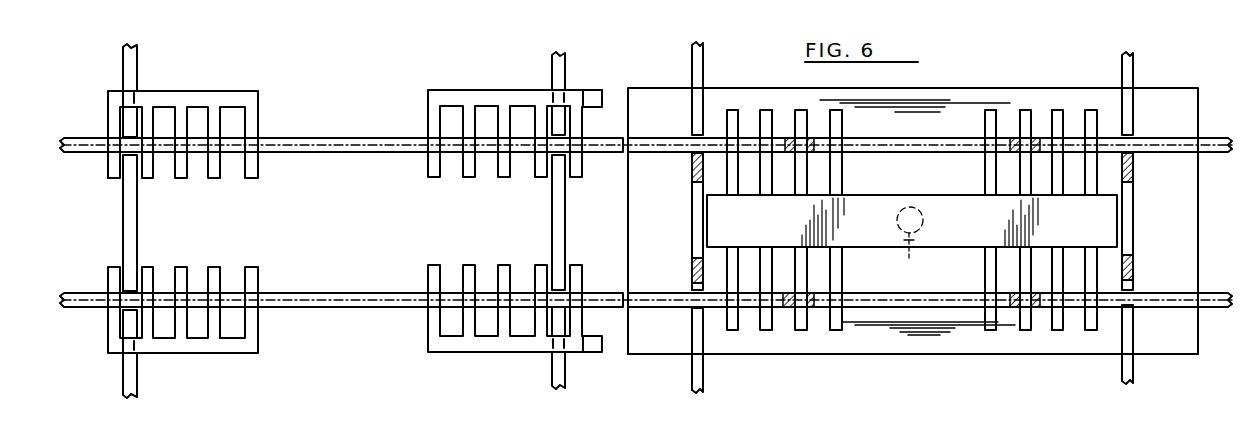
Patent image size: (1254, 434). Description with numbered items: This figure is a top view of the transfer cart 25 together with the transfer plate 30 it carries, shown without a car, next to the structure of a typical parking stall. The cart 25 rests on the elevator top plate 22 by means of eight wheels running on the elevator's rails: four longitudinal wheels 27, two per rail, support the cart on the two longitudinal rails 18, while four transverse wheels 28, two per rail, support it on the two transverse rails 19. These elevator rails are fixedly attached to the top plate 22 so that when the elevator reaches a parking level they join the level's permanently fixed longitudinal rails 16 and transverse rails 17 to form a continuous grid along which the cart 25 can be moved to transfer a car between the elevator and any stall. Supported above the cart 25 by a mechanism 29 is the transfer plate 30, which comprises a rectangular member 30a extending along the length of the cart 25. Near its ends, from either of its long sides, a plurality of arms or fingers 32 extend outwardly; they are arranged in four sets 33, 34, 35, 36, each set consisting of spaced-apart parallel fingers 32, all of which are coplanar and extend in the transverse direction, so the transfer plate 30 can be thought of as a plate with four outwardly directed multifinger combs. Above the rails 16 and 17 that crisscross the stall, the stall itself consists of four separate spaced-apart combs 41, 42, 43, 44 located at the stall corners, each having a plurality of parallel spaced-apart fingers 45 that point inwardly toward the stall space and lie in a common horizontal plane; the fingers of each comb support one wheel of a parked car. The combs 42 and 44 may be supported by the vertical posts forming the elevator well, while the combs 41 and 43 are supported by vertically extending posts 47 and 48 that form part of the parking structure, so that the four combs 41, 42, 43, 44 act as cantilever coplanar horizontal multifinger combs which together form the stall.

The longitudinal rails 16 is at (357, 122).
The transverse rails 17 is at (134, 63).
The longitudinal rails of the elevator 18 is at (920, 146).
The transverse rails of the elevator 19 is at (692, 127).
The top plate 22 is at (910, 338).
The transfer cart 25 is at (892, 278).
The longitudinal wheels 27 is at (800, 156).
The transverse wheels 28 is at (692, 170).
The mechanism 29 is at (905, 250).
The transfer plate 30 is at (866, 230).
The rectangular member 30a is at (1105, 210).
The fingers 32 is at (768, 110).
The finger set 33 is at (812, 283).
The finger set 34 is at (1014, 252).
The finger set 35 is at (819, 122).
The finger set 36 is at (1005, 122).
The comb 41 is at (259, 346).
The comb 42 is at (428, 351).
The comb 43 is at (255, 90).
The comb 44 is at (446, 85).
The fingers 45 is at (217, 178).
The vertically extending post 47 is at (118, 352).
The vertically extending post 48 is at (113, 95).